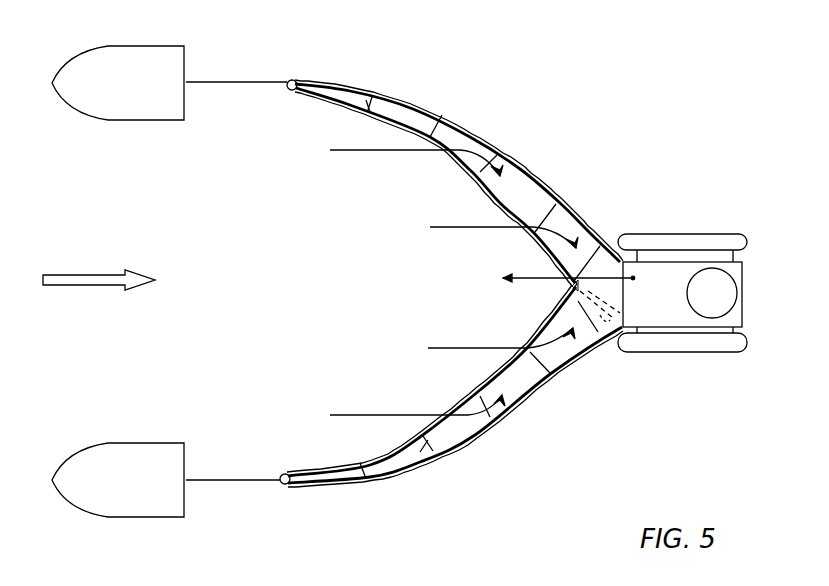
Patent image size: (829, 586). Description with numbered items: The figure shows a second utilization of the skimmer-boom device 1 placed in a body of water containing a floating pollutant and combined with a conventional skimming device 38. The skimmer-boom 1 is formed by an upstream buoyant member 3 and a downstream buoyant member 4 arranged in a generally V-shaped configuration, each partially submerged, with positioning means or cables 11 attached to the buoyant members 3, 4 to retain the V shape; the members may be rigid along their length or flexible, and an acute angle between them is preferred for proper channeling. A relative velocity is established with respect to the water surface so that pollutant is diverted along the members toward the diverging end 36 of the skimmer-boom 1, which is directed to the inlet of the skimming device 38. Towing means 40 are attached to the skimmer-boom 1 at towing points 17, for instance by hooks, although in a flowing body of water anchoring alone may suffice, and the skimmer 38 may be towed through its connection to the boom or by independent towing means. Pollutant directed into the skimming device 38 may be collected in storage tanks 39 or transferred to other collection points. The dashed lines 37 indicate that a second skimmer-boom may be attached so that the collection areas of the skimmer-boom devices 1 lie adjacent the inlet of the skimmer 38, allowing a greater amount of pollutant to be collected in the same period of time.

The skimmer-boom device 1 is at (427, 104).
The upstream buoyant member 3 is at (462, 167).
The downstream buoyant member 4 is at (480, 137).
The positioning means or cables 11 is at (377, 100).
The towing points 17 is at (292, 80).
The apex of boom 36 is at (572, 289).
The dashed lines 37 is at (599, 343).
The skimming device 38 is at (647, 307).
The storage tanks 39 is at (727, 293).
The towing means 40 is at (123, 95).